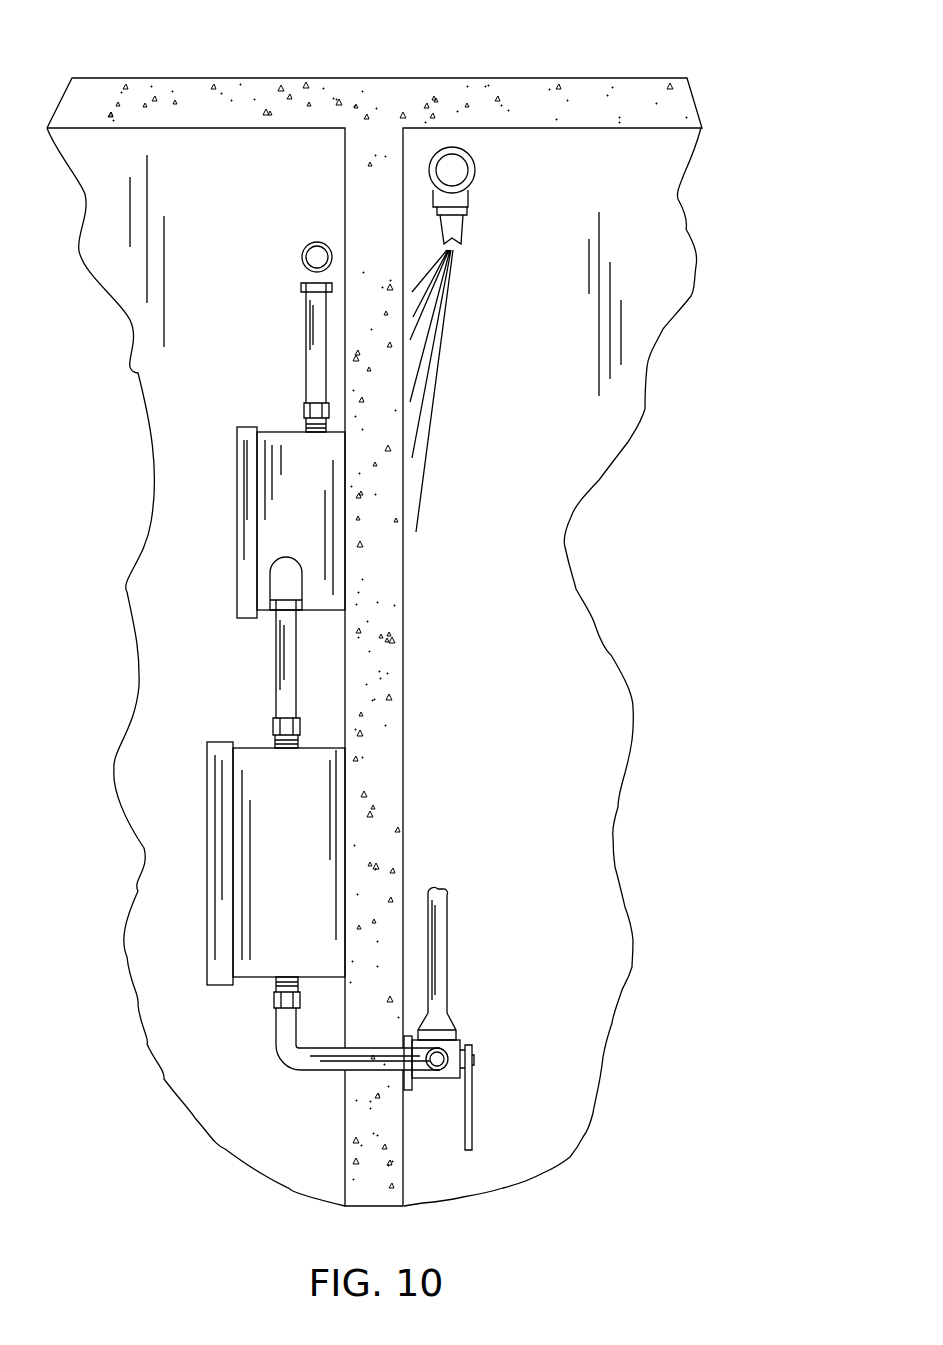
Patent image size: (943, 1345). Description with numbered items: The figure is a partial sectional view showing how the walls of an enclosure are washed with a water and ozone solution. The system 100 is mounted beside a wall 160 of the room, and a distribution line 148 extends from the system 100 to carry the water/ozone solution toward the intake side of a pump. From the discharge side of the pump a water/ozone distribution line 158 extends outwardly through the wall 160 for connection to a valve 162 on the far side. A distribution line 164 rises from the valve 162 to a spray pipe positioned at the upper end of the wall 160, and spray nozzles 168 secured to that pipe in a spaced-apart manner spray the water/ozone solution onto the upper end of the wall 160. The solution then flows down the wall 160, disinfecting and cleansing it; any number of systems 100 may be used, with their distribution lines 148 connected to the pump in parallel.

The system 100 is at (238, 485).
The distribution line 148 is at (283, 671).
The water/ozone distribution line 158 is at (268, 852).
The wall 160 is at (473, 158).
The valve 162 is at (447, 1040).
The distribution line 164 is at (437, 917).
The spray nozzles 168 is at (462, 233).